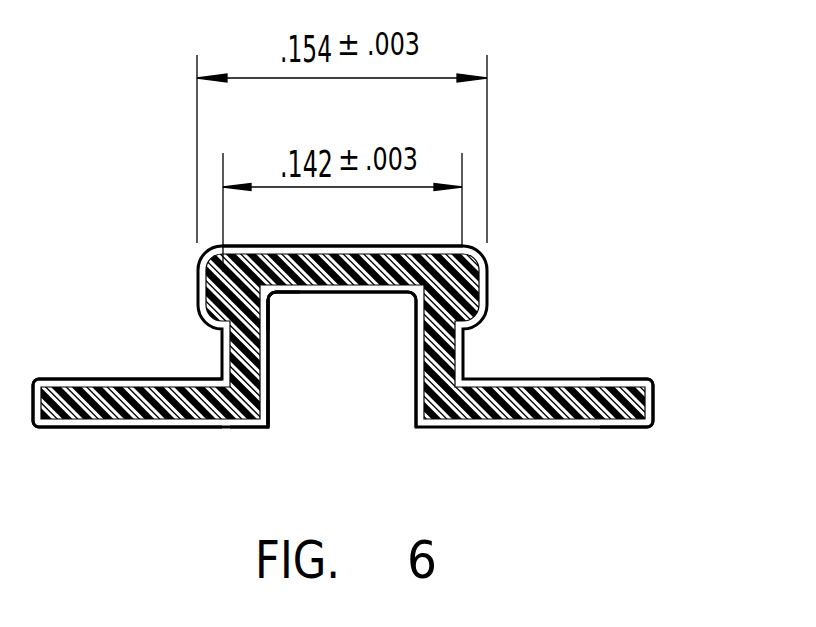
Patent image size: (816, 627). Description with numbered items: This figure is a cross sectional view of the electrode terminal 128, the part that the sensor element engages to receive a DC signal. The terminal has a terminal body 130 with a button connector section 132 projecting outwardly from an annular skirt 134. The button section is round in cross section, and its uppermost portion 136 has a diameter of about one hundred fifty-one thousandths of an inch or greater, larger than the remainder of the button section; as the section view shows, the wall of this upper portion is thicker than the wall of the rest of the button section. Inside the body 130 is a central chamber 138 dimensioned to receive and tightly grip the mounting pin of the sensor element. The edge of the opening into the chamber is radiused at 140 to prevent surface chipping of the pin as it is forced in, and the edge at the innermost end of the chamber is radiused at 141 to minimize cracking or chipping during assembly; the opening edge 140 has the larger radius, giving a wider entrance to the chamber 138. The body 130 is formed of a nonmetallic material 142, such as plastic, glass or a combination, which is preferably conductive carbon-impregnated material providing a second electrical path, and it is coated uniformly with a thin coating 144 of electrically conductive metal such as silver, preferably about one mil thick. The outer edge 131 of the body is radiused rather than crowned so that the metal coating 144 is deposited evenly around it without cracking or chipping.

The electrode terminal 128 is at (532, 270).
The terminal body 130 is at (443, 362).
The outer edge 131 is at (655, 398).
The button connector section 132 is at (256, 357).
The annular skirt 134 is at (123, 407).
The uppermost portion 136 is at (214, 274).
The central chamber 138 is at (283, 383).
The radiused edge 140 is at (265, 427).
The radiused edge 141 is at (275, 298).
The nonmetallic material 142 is at (260, 242).
The coating 144 is at (342, 242).